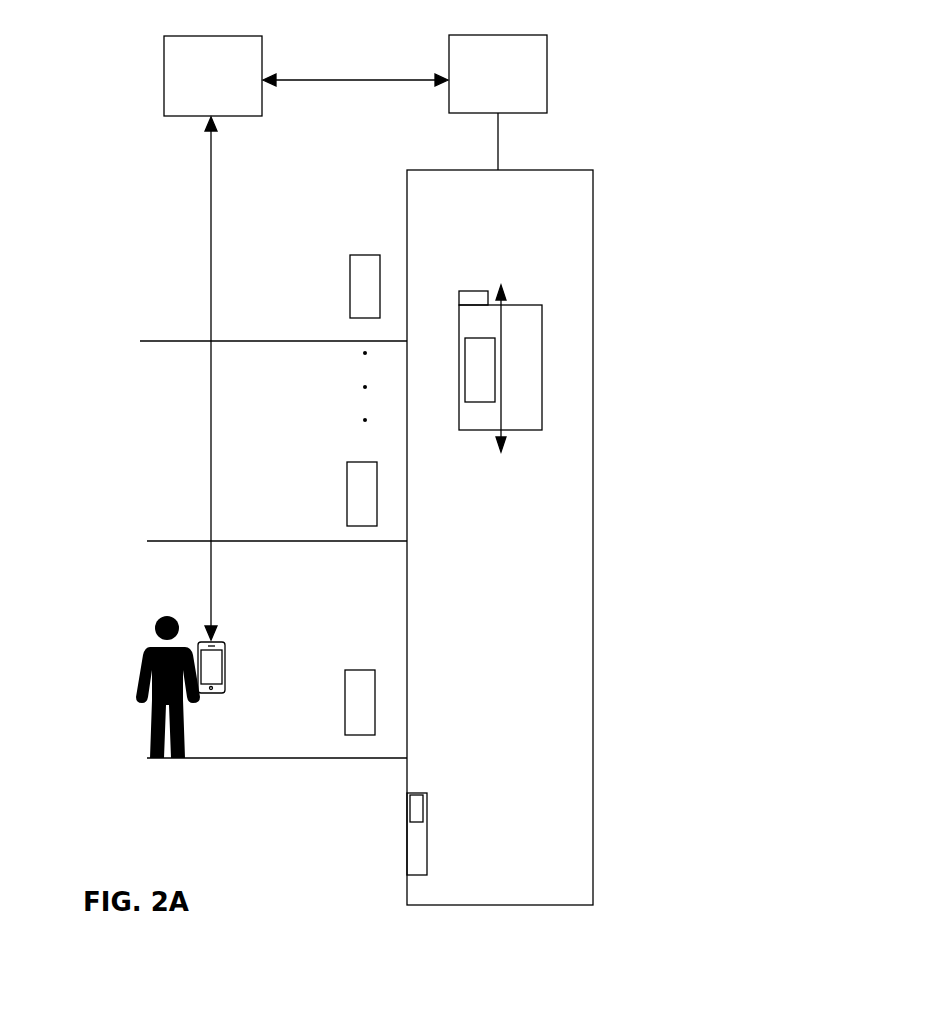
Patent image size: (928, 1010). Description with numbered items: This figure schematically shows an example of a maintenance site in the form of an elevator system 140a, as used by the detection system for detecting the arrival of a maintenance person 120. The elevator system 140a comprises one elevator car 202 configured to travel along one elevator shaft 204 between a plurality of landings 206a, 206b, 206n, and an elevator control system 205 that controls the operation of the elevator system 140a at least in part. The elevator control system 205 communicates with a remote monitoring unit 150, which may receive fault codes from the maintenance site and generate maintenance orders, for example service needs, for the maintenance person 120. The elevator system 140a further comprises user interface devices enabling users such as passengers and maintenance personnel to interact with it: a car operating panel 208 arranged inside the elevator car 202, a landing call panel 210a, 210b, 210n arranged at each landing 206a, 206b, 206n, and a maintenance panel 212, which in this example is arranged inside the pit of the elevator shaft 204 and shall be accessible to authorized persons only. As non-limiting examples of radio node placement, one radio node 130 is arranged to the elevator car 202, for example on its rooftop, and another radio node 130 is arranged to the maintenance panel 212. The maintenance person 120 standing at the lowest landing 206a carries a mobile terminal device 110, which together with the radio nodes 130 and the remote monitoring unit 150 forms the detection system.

The remote monitoring unit 150 is at (213, 76).
The elevator control system 205 is at (498, 74).
The elevator system 140a is at (694, 174).
The elevator shaft 204 is at (593, 730).
The elevator car 202 is at (520, 430).
The car operating panel 208 is at (473, 402).
The radio node 130 is at (473, 291).
The maintenance panel 212 is at (428, 845).
The landing call panel 210a is at (345, 688).
The landing call panel 210b is at (347, 492).
The landing call panel 210n is at (348, 275).
The landing 206a is at (162, 758).
The landing 206b is at (177, 541).
The landing 206n is at (150, 345).
The maintenance person 120 is at (142, 653).
The mobile terminal device 110 is at (217, 693).